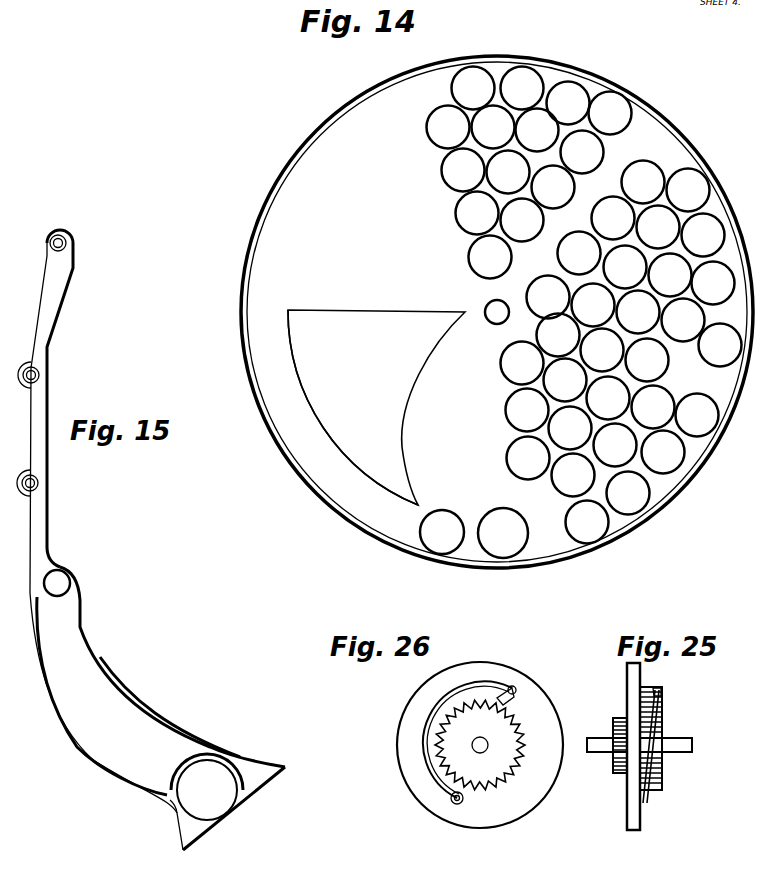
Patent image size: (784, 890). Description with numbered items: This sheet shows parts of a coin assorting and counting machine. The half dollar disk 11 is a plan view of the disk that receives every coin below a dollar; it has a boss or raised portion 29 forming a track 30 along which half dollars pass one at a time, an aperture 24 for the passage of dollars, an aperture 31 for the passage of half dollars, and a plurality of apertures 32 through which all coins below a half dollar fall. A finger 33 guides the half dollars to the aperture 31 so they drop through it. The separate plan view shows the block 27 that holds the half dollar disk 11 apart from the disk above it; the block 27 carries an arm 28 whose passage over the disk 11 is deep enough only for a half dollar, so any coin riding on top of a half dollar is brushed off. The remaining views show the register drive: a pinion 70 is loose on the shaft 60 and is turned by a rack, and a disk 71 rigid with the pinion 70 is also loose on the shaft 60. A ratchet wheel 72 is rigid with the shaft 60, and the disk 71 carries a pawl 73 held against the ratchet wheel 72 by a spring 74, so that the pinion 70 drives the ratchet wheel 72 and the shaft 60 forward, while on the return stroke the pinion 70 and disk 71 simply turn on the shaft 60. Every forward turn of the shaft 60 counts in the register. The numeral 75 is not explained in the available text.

In FIG. 14, the half dollar disk 11 is at (598, 540).
In FIG. 14, the aperture 24 is at (503, 558).
In FIG. 15, the aperture 24 is at (223, 808).
In FIG. 15, the block 27 is at (98, 661).
In FIG. 15, the arm 28 is at (43, 467).
In FIG. 14, the boss or raised portion 29 is at (326, 318).
In FIG. 14, the track 30 is at (330, 470).
In FIG. 14, the aperture 31 is at (440, 554).
In FIG. 14, the apertures 32 is at (520, 88).
In FIG. 15, the finger 33 is at (176, 846).
In FIG. 26, the shaft 60 is at (477, 752).
In FIG. 25, the shaft 60 is at (690, 744).
In FIG. 25, the pinion 70 is at (616, 778).
In FIG. 26, the disk 71 is at (548, 765).
In FIG. 25, the disk 71 is at (626, 832).
In FIG. 26, the ratchet wheel 72 is at (490, 775).
In FIG. 25, the ratchet wheel 72 is at (663, 785).
In FIG. 26, the pawl 73 is at (506, 686).
In FIG. 25, the pawl 73 is at (662, 692).
In FIG. 26, the spring 74 is at (422, 752).
In FIG. 25, the spring 74 is at (665, 770).
In FIG. 15, the member 75 is at (78, 881).